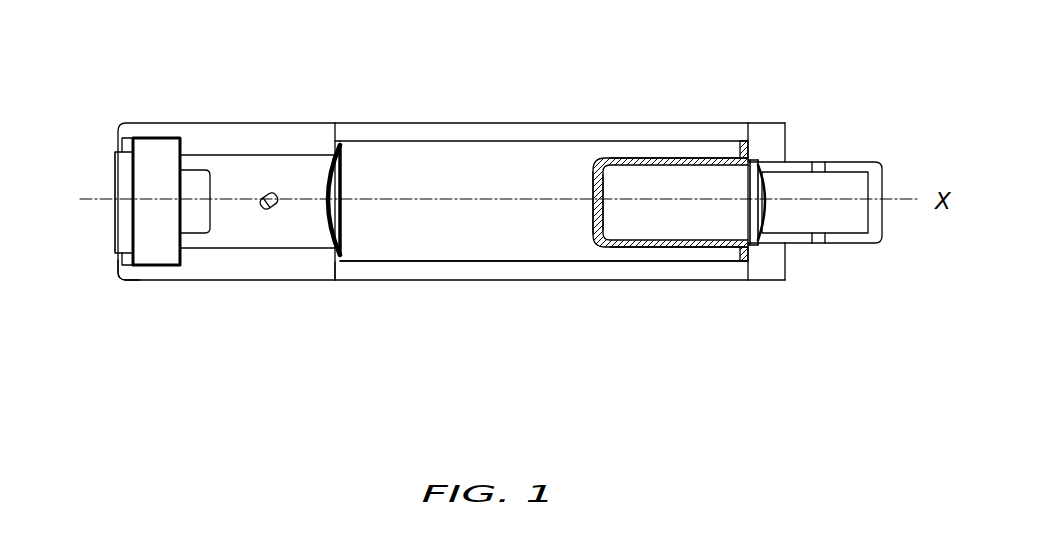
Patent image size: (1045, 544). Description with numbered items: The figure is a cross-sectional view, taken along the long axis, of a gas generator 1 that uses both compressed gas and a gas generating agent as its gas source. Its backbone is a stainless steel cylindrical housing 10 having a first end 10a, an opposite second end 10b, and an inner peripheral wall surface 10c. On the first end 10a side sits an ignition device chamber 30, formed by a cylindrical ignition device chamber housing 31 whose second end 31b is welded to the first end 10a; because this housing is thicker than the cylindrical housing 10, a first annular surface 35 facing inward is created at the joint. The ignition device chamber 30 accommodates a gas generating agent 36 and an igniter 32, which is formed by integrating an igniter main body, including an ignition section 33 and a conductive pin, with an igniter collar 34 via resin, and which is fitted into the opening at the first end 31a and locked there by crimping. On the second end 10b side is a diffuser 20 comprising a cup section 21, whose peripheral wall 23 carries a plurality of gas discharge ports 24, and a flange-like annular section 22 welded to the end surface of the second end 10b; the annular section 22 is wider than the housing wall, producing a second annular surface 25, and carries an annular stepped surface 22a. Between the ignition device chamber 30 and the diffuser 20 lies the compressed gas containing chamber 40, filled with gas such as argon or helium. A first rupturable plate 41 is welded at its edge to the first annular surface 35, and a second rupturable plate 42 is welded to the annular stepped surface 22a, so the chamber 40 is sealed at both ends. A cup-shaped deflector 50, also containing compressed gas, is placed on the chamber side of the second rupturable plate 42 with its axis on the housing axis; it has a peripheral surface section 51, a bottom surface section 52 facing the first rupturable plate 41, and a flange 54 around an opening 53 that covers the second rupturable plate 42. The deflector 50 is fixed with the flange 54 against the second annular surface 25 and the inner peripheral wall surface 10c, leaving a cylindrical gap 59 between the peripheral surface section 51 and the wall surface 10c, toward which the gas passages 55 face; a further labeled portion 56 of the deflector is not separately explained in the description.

The gas generator 1 is at (590, 95).
The cylindrical housing 10 is at (470, 123).
The first end of cylindrical housing 10a is at (330, 133).
The second end of cylindrical housing 10b is at (751, 128).
The inner peripheral wall surface 10c is at (505, 262).
The diffuser 20 is at (818, 86).
The cup section 21 is at (860, 162).
The annular section 22 is at (790, 132).
The annular stepped surface 22a is at (750, 250).
The peripheral wall 23 is at (850, 244).
The gas discharge ports 24 is at (815, 243).
The second annular surface 25 is at (742, 258).
The ignition device chamber 30 is at (232, 240).
The ignition device chamber housing 31 is at (232, 123).
The first end of ignition device chamber housing 31a is at (118, 270).
The second end of ignition device chamber housing 31b is at (338, 270).
The igniter 32 is at (33, 72).
The ignition section 33 is at (195, 185).
The igniter collar 34 is at (147, 190).
The first annular surface 35 is at (338, 143).
The gas generating agent 36 is at (270, 191).
The compressed gas containing chamber 40 is at (447, 184).
The first rupturable plate 41 is at (322, 225).
The second rupturable plate 42 is at (770, 207).
The cup-shaped deflector 50 is at (618, 249).
The peripheral surface section 51 is at (668, 249).
The bottom surface section 52 is at (593, 192).
The opening 53 is at (764, 190).
The flange 54 is at (740, 150).
The gas passages 55 is at (632, 158).
The inner surface of end wall 56 is at (598, 222).
The cylindrical gap 59 is at (690, 150).